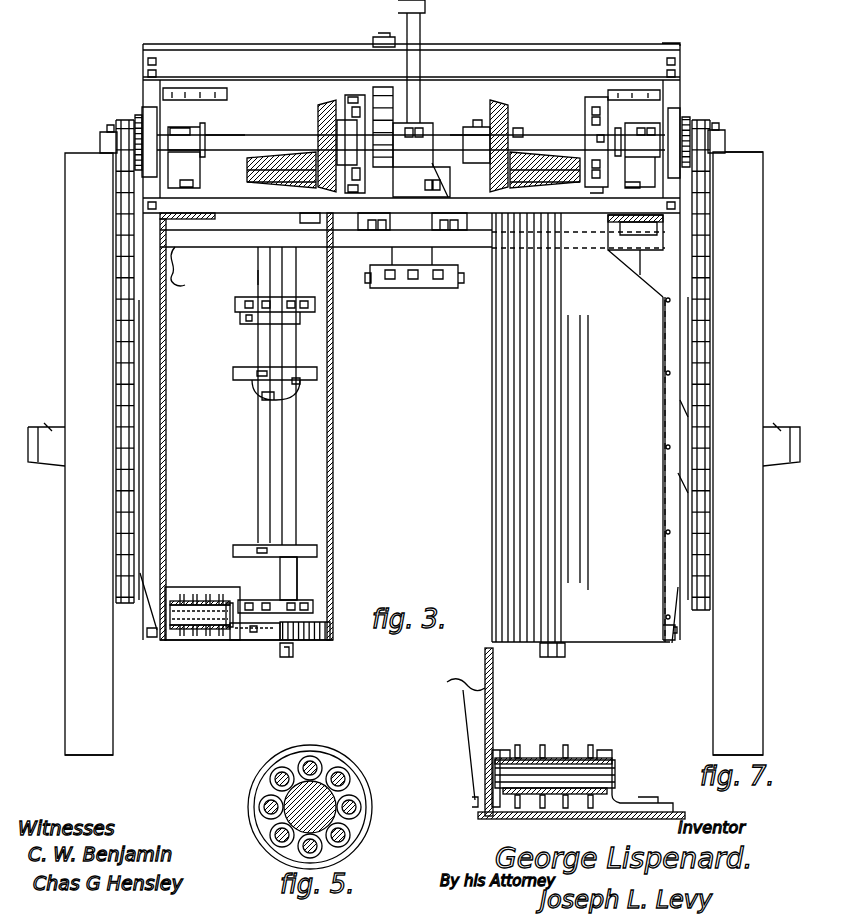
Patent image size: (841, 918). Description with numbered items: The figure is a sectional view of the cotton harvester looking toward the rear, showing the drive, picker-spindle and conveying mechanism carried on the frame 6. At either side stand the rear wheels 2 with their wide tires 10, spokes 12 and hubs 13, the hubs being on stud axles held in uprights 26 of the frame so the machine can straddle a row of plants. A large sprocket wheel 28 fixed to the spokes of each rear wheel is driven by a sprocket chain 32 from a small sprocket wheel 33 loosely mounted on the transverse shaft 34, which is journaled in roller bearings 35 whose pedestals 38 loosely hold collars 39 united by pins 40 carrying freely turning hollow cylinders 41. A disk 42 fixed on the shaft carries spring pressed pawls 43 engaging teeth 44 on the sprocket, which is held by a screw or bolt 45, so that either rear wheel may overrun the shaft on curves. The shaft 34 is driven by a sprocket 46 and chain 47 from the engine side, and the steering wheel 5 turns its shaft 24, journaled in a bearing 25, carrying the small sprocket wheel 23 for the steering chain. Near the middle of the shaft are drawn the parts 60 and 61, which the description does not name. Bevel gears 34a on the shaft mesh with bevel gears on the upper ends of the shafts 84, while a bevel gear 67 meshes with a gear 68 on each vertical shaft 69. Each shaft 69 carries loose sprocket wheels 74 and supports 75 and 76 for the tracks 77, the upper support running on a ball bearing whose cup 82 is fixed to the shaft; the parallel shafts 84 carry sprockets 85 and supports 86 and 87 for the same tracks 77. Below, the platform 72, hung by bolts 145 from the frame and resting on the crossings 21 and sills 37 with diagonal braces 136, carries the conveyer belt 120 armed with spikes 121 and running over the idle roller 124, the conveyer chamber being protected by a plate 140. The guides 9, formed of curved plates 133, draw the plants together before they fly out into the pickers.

In FIG. 3, the rear wheels 2 is at (414, 591).
In FIG. 3, the steering wheel 5 is at (396, 4).
In FIG. 3, the frame 6 is at (157, 604).
In FIG. 7, the frame 6 is at (454, 730).
In FIG. 3, the guides 9 is at (493, 455).
In FIG. 3, the tires 10 is at (80, 258).
In FIG. 3, the spokes 12 is at (680, 114).
In FIG. 3, the hubs 13 is at (50, 432).
In FIG. 3, the crossings 21 is at (192, 637).
In FIG. 3, the small sprocket wheel 23 is at (413, 288).
In FIG. 3, the shaft 24 is at (421, 106).
In FIG. 3, the bearing 25 is at (445, 265).
In FIG. 3, the uprights 26 is at (681, 46).
In FIG. 3, the large sprocket wheel 28 is at (140, 355).
In FIG. 3, the sprocket chains 32 is at (117, 291).
In FIG. 3, the small sprocket wheels 33 is at (100, 140).
In FIG. 3, the shaft 34 is at (246, 140).
In FIG. 3, the bevel gears 34a is at (312, 113).
In FIG. 3, the roller bearings 35 is at (215, 135).
In FIG. 3, the sills 37 is at (200, 233).
In FIG. 3, the pedestals 38 is at (208, 150).
In FIG. 5, the collars 39 is at (362, 776).
In FIG. 5, the pins 40 is at (338, 770).
In FIG. 5, the hollow cylinders 41 is at (300, 762).
In FIG. 3, the disk 42 is at (143, 108).
In FIG. 3, the spring pressed pawls 43 is at (137, 113).
In FIG. 3, the teeth 44 is at (708, 160).
In FIG. 3, the screw or bolt 45 is at (108, 126).
In FIG. 3, the sprocket 46 is at (585, 118).
In FIG. 3, the chain 47 is at (590, 88).
In FIG. 3, the clutch block 60 is at (358, 95).
In FIG. 3, the clutch plate 61 is at (343, 108).
In FIG. 3, the bevel gear 67 is at (318, 116).
In FIG. 3, the gear 68 is at (272, 166).
In FIG. 3, the vertical shaft 69 is at (262, 172).
In FIG. 3, the platform 72 is at (178, 640).
In FIG. 7, the platform 72 is at (502, 827).
In FIG. 3, the sprocket wheels 74 is at (280, 590).
In FIG. 3, the support 75 is at (262, 574).
In FIG. 3, the support 76 is at (262, 348).
In FIG. 3, the tracks 77 is at (236, 374).
In FIG. 3, the cup 82 is at (253, 400).
In FIG. 3, the shafts 84 is at (290, 446).
In FIG. 3, the sprockets 85 is at (304, 297).
In FIG. 3, the support 86 is at (292, 384).
In FIG. 3, the support 87 is at (297, 568).
In FIG. 3, the endless belt 120 is at (190, 600).
In FIG. 7, the endless belt 120 is at (580, 756).
In FIG. 7, the spikes 121 is at (565, 745).
In FIG. 7, the idle roller 124 is at (620, 768).
In FIG. 3, the curved plates 133 is at (599, 452).
In FIG. 3, the diagonal braces 136 is at (230, 208).
In FIG. 3, the plate 140 is at (167, 490).
In FIG. 7, the plate 140 is at (491, 690).
In FIG. 3, the bolts 145 is at (287, 650).